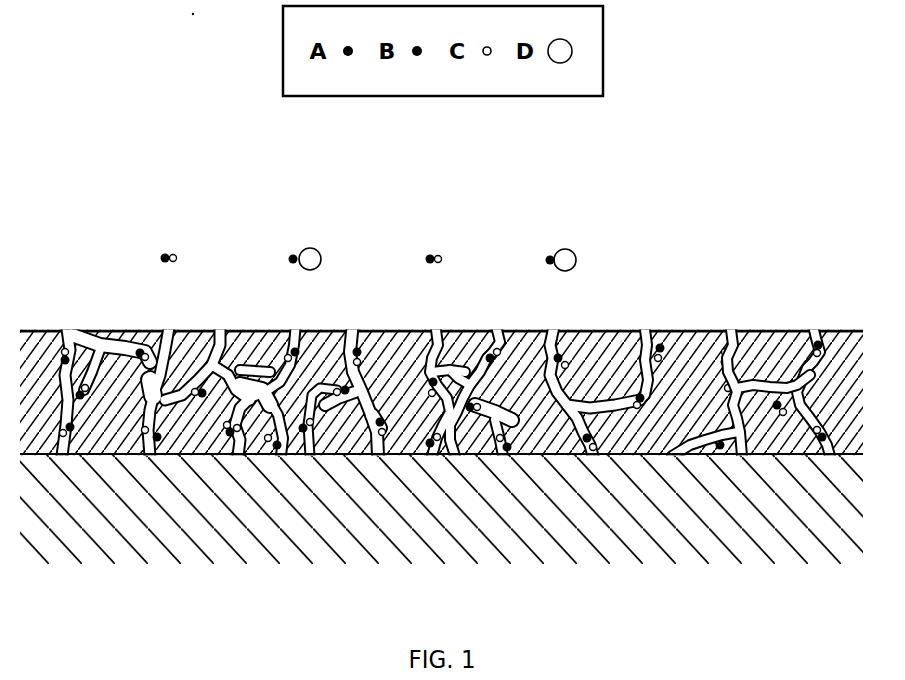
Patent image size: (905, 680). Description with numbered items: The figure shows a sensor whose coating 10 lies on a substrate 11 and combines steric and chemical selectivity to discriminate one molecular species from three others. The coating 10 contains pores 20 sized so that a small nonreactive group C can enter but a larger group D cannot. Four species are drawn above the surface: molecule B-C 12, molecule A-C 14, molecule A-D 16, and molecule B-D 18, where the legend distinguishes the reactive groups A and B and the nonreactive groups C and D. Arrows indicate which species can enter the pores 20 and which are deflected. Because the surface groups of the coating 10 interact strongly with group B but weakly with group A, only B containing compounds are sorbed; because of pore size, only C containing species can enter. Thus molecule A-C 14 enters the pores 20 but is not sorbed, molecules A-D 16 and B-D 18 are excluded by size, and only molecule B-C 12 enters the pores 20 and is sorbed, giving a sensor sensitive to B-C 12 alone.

The coating 10 is at (441, 389).
The substrate 11 is at (441, 509).
The molecule B-C 12 is at (170, 320).
The molecule A-C 14 is at (435, 320).
The molecule A-D 16 is at (553, 330).
The molecule B-D 18 is at (298, 330).
The pores 20 is at (655, 330).